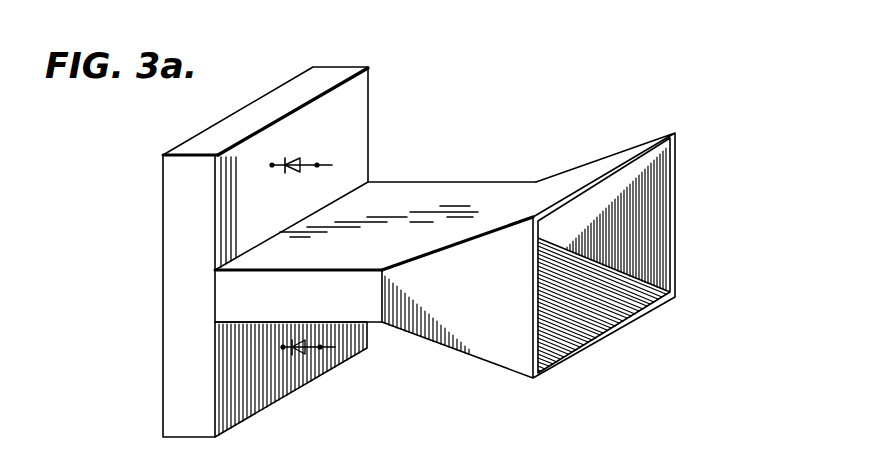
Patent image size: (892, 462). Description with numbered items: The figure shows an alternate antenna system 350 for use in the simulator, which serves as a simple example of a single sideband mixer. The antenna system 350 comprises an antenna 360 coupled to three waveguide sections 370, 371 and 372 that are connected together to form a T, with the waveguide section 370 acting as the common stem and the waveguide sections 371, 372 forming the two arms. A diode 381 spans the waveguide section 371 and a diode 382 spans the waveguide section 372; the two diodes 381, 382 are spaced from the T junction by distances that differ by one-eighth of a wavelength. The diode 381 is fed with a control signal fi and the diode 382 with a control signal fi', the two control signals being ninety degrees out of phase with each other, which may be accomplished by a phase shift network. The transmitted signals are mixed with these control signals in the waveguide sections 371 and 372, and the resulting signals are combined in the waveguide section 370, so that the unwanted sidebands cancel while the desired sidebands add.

The antenna system 350 is at (451, 245).
The antenna 360 is at (675, 187).
The waveguide section 370 is at (488, 182).
The waveguide section 371 is at (368, 122).
The waveguide section 372 is at (337, 370).
The diode 381 is at (288, 173).
The diode 382 is at (302, 338).